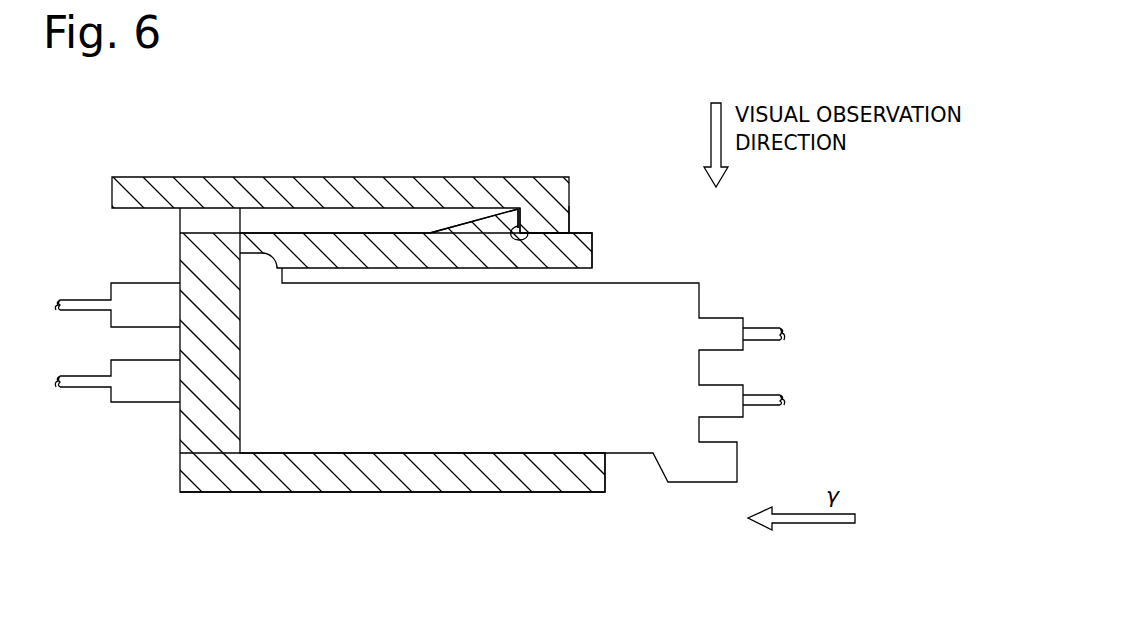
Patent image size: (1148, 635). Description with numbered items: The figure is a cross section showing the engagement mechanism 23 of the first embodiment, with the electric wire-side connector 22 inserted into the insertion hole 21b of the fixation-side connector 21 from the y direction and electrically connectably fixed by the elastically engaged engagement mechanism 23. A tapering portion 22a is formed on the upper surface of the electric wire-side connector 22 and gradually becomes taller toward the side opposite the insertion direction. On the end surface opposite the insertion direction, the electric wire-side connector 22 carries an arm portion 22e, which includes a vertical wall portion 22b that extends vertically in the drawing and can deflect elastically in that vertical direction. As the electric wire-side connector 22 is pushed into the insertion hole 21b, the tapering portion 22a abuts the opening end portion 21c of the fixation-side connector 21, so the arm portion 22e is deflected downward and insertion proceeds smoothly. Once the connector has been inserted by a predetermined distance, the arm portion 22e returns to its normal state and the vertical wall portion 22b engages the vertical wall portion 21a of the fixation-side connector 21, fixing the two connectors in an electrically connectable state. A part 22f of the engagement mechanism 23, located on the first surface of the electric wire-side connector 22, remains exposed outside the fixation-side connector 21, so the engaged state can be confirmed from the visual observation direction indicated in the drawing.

The fixation-side connector 21 is at (247, 188).
The vertical wall portion of the fixation-side connector 21a is at (516, 238).
The insertion hole 21b is at (400, 453).
The opening end portion 21c is at (572, 205).
The electric wire-side connector 22 is at (625, 438).
The tapering portion 22a is at (477, 217).
The vertical wall portion 22b is at (518, 222).
The arm portion 22e is at (328, 212).
The part of the engagement mechanism 22f is at (597, 218).
The engagement mechanism 23 is at (512, 185).